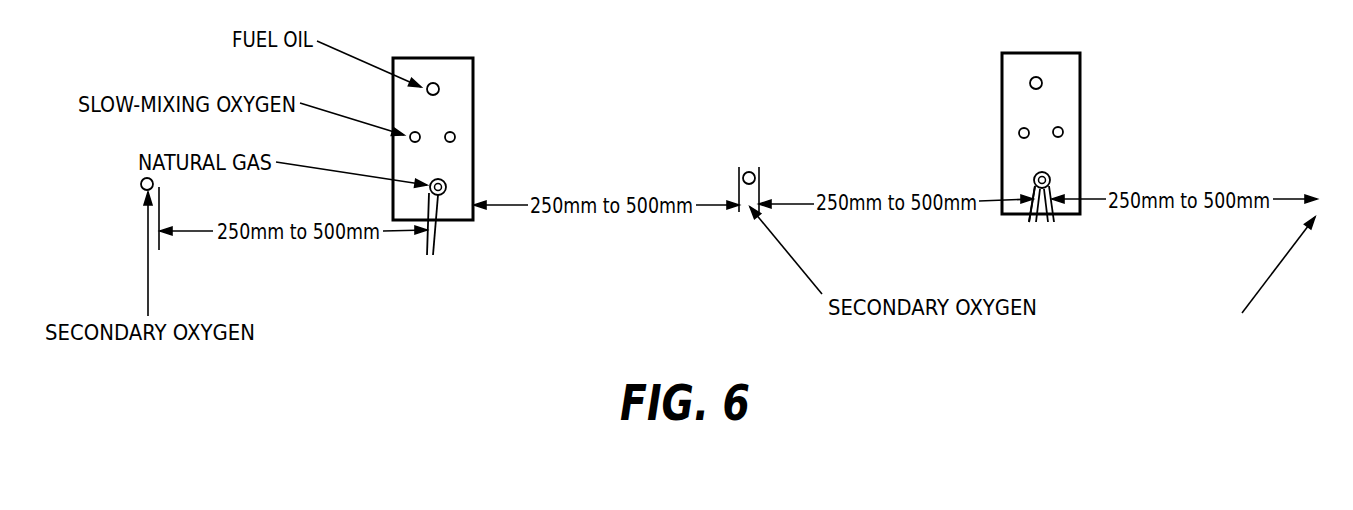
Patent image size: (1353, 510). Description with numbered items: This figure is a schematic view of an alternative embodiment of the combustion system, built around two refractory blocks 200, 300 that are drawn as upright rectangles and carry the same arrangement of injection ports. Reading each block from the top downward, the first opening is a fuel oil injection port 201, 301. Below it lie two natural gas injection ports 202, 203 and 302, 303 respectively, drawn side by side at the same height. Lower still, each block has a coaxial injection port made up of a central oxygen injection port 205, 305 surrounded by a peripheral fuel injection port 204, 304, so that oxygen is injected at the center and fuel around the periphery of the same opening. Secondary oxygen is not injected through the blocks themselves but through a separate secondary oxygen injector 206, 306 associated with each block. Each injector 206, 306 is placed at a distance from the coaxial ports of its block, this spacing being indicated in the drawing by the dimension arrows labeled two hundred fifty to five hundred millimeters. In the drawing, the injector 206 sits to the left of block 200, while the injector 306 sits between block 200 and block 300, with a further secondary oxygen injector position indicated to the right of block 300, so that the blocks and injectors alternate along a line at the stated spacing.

The refractory block 200 is at (463, 80).
The fuel oil injection port 201 is at (433, 82).
The natural gas injection port 202 is at (456, 138).
The natural gas injection port 203 is at (410, 139).
The peripheral fuel injection port 204 is at (446, 190).
The central oxygen injection port 205 is at (435, 239).
The secondary oxygen injector 206 is at (142, 187).
The refractory block 300 is at (1067, 72).
The fuel oil injection port 301 is at (1036, 77).
The natural gas injection port 302 is at (1064, 132).
The natural gas injection port 303 is at (1018, 133).
The peripheral fuel injection port 304 is at (1050, 214).
The central oxygen injection port 305 is at (1032, 213).
The secondary oxygen injector 306 is at (749, 171).